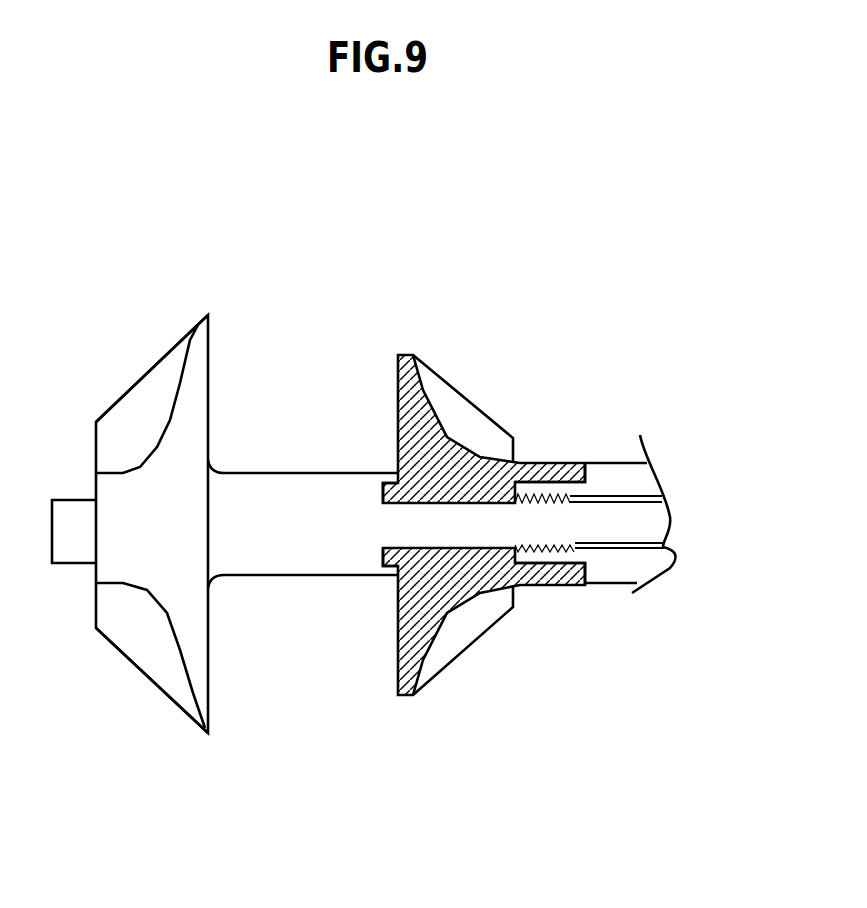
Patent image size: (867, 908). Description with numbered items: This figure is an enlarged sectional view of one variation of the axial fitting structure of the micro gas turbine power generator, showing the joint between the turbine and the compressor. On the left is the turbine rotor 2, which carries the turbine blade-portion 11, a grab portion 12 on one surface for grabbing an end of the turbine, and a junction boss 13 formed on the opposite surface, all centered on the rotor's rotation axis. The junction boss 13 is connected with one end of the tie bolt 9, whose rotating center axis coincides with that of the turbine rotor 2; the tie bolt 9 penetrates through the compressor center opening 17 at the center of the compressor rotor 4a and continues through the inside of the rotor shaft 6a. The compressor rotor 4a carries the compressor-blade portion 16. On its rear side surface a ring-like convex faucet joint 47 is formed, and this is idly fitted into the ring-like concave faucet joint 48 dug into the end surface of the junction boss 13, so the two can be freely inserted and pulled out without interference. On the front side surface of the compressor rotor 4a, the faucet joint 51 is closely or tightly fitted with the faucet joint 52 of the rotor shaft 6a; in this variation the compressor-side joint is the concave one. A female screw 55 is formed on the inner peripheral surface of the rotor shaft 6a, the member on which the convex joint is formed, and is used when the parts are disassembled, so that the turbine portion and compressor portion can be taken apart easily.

The turbine rotor 2 is at (197, 408).
The turbine blade-portion 11 is at (127, 424).
The grab portion 12 is at (62, 547).
The junction boss 13 is at (287, 488).
The compressor rotor 4a is at (402, 355).
The convex faucet joint 47 is at (381, 478).
The concave faucet joint 48 is at (385, 568).
The compressor-blade portion 16 is at (478, 427).
The compressor center opening 17 is at (512, 587).
The faucet joint 51 is at (578, 462).
The faucet joint 52 is at (548, 549).
The tie bolt 9 is at (638, 522).
The rotor shaft 6a is at (637, 475).
The female screw 55 is at (620, 548).